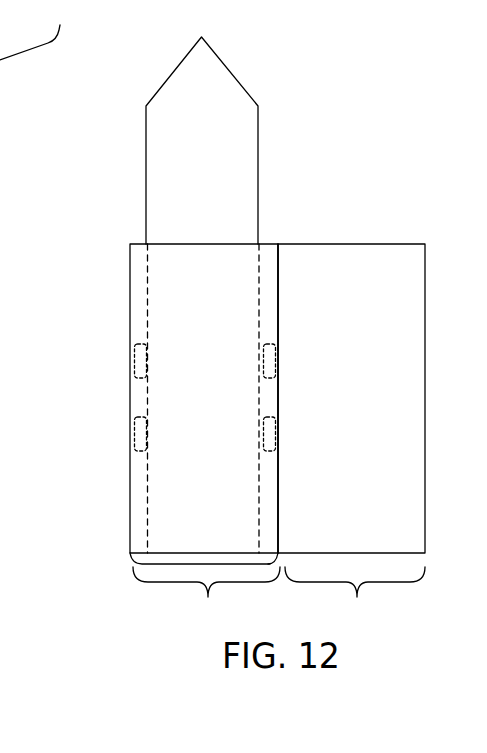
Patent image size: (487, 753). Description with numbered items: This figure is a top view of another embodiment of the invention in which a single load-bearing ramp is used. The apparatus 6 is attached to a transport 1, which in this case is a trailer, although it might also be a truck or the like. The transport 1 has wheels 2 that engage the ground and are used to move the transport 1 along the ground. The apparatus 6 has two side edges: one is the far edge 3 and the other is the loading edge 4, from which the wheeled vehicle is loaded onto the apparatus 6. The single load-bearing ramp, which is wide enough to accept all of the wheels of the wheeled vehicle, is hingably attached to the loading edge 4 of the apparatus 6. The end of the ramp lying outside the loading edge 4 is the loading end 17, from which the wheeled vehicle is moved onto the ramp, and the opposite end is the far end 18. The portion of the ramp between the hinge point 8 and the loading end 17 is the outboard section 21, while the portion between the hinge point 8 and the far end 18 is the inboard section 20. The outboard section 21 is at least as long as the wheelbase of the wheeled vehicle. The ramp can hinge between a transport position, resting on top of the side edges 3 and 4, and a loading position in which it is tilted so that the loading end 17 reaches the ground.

The transport 1 is at (202, 295).
The wheels 2 is at (135, 362).
The far edge 3 is at (133, 562).
The loading edge 4 is at (276, 560).
The apparatus 6 is at (313, 203).
The hinge point 8 is at (268, 248).
The loading end 17 is at (425, 398).
The far end 18 is at (130, 292).
The inboard section 20 is at (206, 598).
The outboard section 21 is at (355, 598).